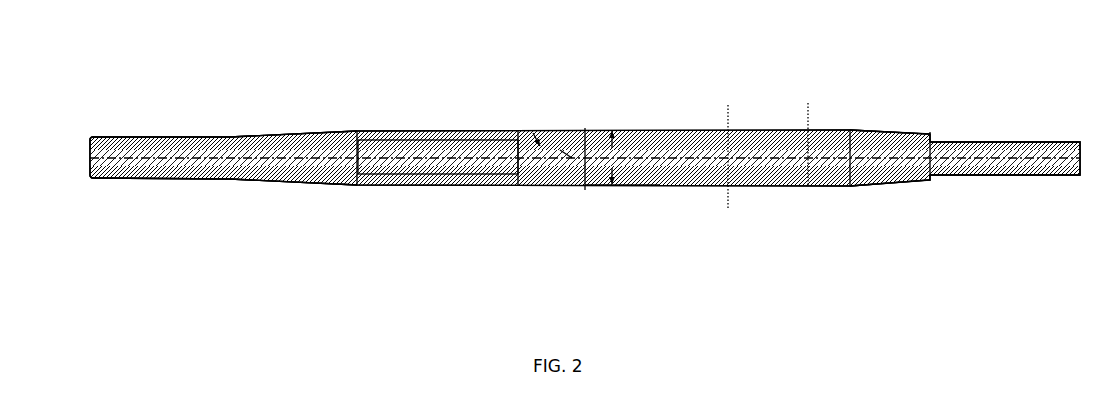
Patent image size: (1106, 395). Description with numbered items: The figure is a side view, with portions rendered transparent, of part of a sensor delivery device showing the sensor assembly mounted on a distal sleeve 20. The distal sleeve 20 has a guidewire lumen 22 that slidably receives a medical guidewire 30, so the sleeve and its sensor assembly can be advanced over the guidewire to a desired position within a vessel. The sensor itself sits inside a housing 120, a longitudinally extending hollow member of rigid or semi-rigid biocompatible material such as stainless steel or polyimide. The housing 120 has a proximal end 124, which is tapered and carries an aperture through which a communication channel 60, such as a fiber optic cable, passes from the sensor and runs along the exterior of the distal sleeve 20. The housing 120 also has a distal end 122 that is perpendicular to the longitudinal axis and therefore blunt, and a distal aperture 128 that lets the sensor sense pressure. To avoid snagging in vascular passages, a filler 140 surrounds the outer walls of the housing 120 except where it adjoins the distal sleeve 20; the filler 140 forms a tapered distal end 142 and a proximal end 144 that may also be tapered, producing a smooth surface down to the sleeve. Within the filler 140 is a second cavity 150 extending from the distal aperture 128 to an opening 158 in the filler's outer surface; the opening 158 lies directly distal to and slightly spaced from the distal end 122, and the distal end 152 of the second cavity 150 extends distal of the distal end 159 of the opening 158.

The distal sleeve 20 is at (170, 140).
The guidewire lumen 22 is at (808, 173).
The medical guidewire 30 is at (1043, 172).
The communication channel 60 is at (112, 165).
The housing 120 is at (412, 147).
The distal end of the housing 122 is at (524, 130).
The proximal end of the housing 124 is at (312, 152).
The distal aperture 128 is at (523, 185).
The filler 140 is at (843, 133).
The tapered distal end of the filler 142 is at (930, 137).
The proximal end of the filler 144 is at (163, 178).
The second cavity 150 is at (582, 143).
The distal end of the second cavity 152 is at (578, 163).
The opening 158 is at (550, 150).
The distal end of the opening 159 is at (565, 143).